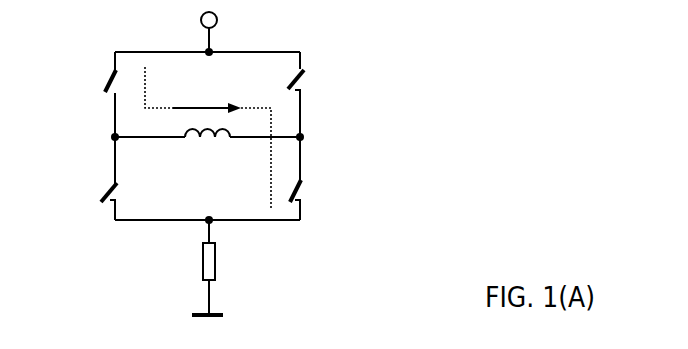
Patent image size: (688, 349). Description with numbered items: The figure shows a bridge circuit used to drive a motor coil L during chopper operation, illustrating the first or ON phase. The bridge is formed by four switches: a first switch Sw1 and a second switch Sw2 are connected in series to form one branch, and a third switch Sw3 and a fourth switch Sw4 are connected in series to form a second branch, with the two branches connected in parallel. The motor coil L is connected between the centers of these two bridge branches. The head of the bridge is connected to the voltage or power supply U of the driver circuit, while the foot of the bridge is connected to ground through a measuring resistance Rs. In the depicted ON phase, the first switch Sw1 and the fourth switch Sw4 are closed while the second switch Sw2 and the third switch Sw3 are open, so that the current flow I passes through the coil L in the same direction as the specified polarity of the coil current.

The voltage or power supply U is at (224, 32).
The first switch Sw1 is at (74, 94).
The second switch Sw2 is at (74, 178).
The third switch Sw3 is at (330, 94).
The fourth switch Sw4 is at (330, 178).
The motor coil L is at (207, 148).
The current flow I is at (208, 137).
The measuring resistance Rs is at (224, 267).